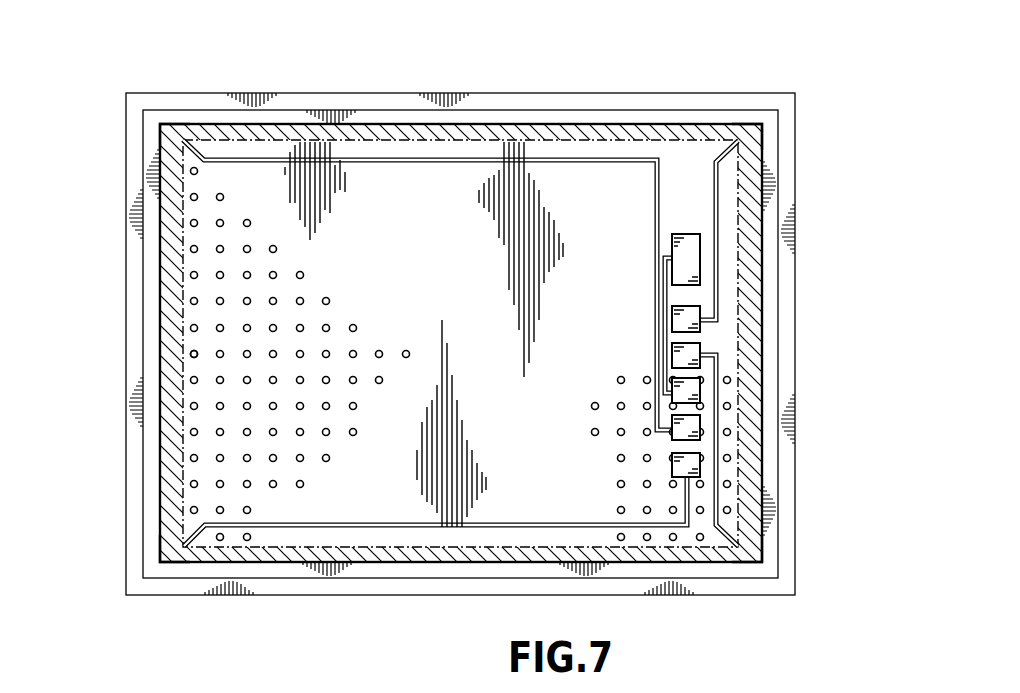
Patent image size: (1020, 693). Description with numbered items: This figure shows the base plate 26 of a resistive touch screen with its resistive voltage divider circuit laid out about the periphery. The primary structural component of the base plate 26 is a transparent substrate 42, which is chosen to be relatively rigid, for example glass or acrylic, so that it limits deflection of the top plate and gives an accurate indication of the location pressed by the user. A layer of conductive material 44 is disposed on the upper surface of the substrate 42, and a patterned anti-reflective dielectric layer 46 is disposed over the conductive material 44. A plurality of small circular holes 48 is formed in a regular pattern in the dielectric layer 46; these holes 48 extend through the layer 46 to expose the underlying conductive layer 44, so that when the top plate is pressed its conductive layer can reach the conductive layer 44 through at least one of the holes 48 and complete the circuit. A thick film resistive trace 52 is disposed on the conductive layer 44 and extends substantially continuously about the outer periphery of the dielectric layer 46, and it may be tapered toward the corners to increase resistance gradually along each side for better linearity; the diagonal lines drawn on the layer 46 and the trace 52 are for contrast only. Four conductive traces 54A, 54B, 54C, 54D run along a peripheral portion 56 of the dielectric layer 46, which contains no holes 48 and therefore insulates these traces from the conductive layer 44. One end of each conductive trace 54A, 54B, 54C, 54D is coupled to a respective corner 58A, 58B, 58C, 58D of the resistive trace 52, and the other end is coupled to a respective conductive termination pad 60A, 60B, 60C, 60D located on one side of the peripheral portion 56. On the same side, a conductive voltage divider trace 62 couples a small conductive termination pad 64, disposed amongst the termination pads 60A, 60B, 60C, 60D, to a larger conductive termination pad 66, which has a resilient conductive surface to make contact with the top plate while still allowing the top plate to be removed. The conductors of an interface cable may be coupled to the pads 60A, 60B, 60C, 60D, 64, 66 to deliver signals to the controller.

The base plate 26 is at (437, 91).
The transparent substrate 42 is at (140, 190).
The layer of conductive material 44 is at (150, 302).
The patterned anti-reflective dielectric layer 46 is at (205, 393).
The circular holes 48 is at (193, 354).
The thick film resistive trace 52 is at (172, 492).
The conductive trace 54A is at (268, 160).
The conductive trace 54B is at (716, 193).
The conductive trace 54C is at (716, 448).
The conductive trace 54D is at (353, 524).
The peripheral portion of the dielectric layer 56 is at (683, 158).
The corner of the resistive trace 58A is at (178, 137).
The corner of the resistive trace 58B is at (752, 131).
The corner of the resistive trace 58C is at (752, 555).
The corner of the resistive trace 58D is at (180, 548).
The conductive termination pad 60A is at (700, 423).
The conductive termination pad 60B is at (700, 327).
The conductive termination pad 60C is at (700, 348).
The conductive termination pad 60D is at (700, 468).
The conductive voltage divider trace 62 is at (663, 296).
The small conductive termination pad 64 is at (700, 394).
The larger conductive termination pad 66 is at (700, 267).